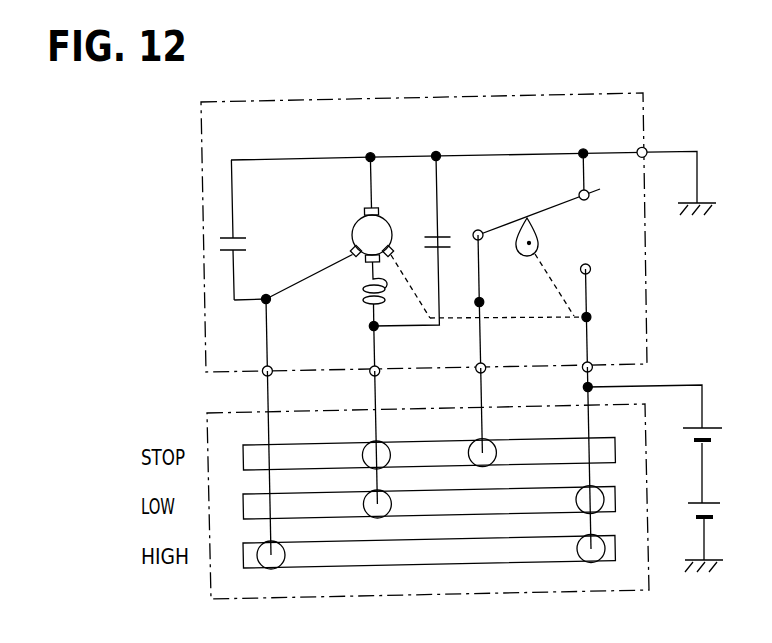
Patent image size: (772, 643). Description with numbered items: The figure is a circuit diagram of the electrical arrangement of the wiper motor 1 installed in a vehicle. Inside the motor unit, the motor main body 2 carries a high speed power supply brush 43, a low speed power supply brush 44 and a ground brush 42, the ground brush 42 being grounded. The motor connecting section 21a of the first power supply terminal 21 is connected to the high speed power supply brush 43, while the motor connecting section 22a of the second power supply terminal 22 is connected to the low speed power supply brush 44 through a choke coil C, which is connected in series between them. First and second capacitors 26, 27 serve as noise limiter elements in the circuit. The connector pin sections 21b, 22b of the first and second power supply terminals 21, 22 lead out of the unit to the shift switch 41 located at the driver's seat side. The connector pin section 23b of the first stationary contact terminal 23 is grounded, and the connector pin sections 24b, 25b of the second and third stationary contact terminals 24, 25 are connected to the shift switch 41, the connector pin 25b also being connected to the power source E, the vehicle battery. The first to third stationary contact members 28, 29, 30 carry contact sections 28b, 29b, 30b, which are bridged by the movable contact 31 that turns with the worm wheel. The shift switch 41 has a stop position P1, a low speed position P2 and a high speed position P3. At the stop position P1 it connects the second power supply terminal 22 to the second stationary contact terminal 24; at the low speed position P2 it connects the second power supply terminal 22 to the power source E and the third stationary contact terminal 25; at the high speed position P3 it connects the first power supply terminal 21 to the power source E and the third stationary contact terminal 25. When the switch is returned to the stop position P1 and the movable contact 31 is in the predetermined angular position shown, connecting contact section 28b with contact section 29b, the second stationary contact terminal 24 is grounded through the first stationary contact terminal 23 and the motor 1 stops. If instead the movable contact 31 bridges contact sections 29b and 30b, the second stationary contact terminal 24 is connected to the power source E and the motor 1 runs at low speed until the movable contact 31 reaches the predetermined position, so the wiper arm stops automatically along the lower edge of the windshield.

The motor 1 is at (512, 96).
The motor main body 2 is at (346, 216).
The first power supply terminal 21 is at (268, 330).
The motor connecting section 21a is at (268, 292).
The connector pin section 21b is at (270, 376).
The second power supply terminal 22 is at (375, 338).
The motor connecting section 22a is at (363, 323).
The connector pin section 22b is at (377, 376).
The first stationary contact terminal 23 is at (614, 152).
The connector pin section 23b is at (640, 158).
The second stationary contact terminal 24 is at (481, 338).
The connector pin section 24b is at (483, 373).
The third stationary contact terminal 25 is at (584, 343).
The connector pin section 25b is at (590, 358).
The first capacitor 26 is at (237, 234).
The second capacitor 27 is at (434, 235).
The first stationary contact member 28 is at (581, 178).
The contact section 28b is at (578, 196).
The second stationary contact member 29 is at (480, 272).
The contact section 29b is at (478, 230).
The third stationary contact member 30 is at (588, 288).
The contact section 30b is at (590, 264).
The movable contact 31 is at (541, 222).
The shift switch 41 is at (207, 430).
The ground brush 42 is at (376, 206).
The high speed power supply brush 43 is at (350, 248).
The low speed power supply brush 44 is at (393, 256).
The choke coil C is at (362, 290).
The power source E is at (710, 424).
The stop position P1 is at (242, 460).
The low speed position P2 is at (242, 509).
The high speed position P3 is at (242, 559).